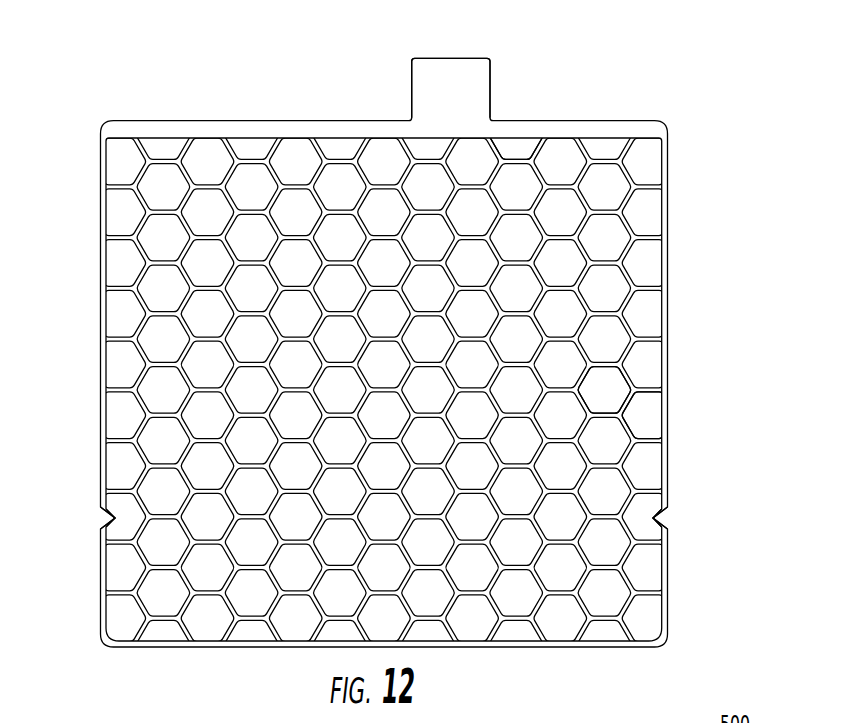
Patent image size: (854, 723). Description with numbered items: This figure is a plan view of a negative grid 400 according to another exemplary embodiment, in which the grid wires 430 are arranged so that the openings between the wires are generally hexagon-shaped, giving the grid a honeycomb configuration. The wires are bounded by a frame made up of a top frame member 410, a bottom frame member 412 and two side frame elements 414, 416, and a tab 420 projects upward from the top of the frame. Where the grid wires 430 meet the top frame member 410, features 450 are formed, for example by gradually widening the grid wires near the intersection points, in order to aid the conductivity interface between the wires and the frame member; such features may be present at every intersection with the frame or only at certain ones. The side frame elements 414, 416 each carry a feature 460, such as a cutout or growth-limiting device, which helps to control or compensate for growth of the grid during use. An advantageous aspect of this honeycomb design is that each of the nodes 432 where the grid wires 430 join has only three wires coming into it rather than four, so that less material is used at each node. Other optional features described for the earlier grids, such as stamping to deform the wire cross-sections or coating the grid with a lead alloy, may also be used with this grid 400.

The grid 400 is at (585, 66).
The top frame member 410 is at (308, 137).
The bottom edge 412 is at (467, 642).
The side frame element 414 is at (100, 408).
The side frame element 416 is at (665, 247).
The tab 420 is at (484, 92).
The grid wires 430 is at (626, 403).
The nodes 432 is at (633, 443).
The features 450 is at (542, 138).
The features 460 is at (110, 518).